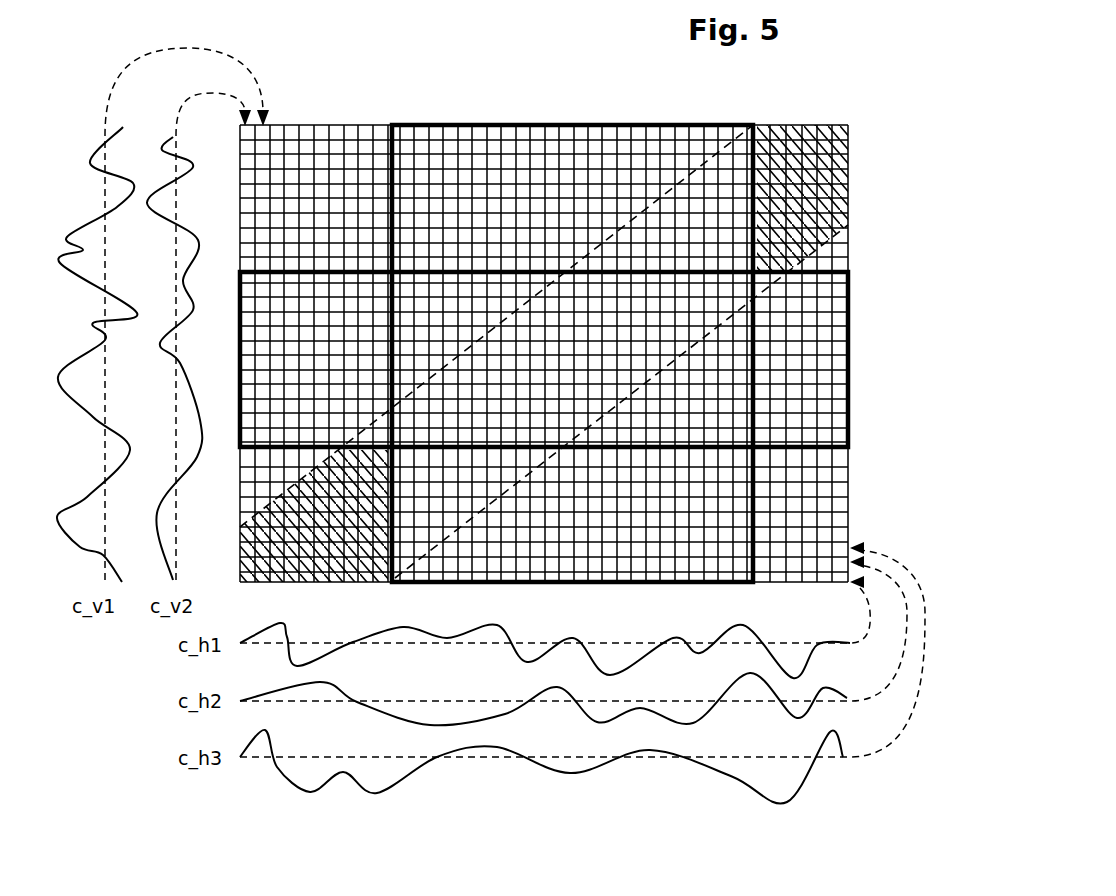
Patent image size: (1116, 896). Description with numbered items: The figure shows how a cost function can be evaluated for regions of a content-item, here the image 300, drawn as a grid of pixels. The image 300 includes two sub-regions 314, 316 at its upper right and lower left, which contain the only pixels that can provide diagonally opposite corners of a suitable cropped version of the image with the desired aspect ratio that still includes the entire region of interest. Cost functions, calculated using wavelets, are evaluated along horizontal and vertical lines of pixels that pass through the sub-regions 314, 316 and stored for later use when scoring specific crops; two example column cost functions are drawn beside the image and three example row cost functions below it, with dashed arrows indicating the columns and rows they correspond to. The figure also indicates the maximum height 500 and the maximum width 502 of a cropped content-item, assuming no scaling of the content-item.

The image 300 is at (425, 125).
The maximum height 500 is at (572, 125).
The maximum width 502 is at (851, 360).
The sub-region 314 is at (802, 198).
The sub-region 316 is at (314, 516).